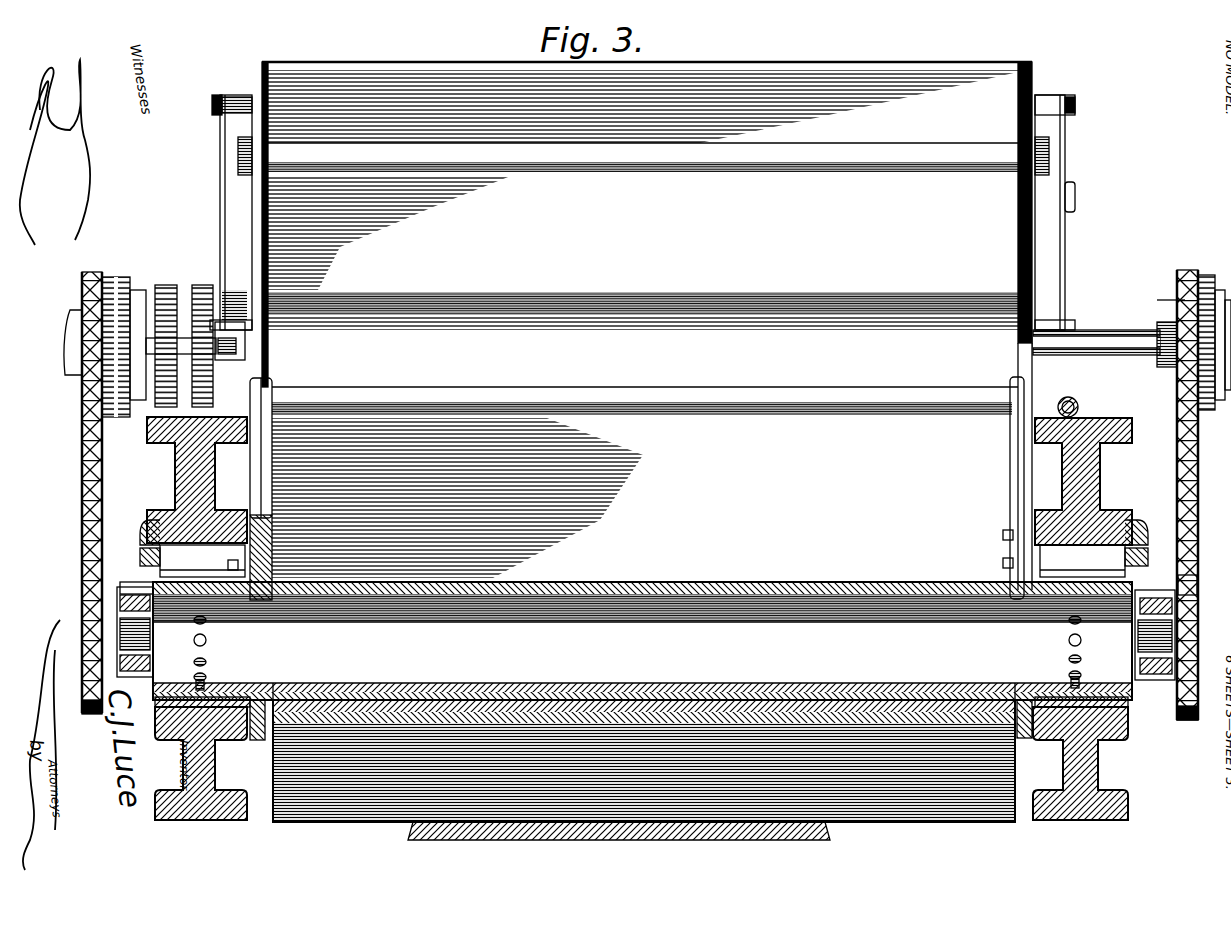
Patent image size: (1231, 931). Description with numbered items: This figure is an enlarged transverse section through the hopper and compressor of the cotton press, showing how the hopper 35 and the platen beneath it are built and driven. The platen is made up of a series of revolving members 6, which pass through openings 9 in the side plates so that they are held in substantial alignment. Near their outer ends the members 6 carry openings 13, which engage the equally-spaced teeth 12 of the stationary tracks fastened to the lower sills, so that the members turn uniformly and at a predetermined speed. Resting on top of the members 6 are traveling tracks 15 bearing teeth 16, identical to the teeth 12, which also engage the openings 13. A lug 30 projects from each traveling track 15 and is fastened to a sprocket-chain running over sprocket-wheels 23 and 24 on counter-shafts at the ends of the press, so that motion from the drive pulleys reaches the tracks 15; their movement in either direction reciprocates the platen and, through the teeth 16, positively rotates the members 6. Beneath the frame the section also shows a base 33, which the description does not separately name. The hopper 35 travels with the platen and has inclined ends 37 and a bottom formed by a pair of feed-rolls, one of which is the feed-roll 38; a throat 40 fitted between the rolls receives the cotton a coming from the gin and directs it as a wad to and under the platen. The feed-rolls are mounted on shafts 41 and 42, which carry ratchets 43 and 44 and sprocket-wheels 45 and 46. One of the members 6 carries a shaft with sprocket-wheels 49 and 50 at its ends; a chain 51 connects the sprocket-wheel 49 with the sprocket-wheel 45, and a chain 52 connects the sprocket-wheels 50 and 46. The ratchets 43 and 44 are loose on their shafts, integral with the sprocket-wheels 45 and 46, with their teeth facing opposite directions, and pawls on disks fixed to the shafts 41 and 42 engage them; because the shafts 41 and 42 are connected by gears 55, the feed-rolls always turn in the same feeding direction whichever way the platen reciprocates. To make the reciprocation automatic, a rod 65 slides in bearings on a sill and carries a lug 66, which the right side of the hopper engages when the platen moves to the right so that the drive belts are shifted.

The revolving members 6 is at (642, 641).
The openings 9 is at (258, 690).
The teeth 12 is at (206, 680).
The openings 13 is at (207, 640).
The traveling tracks 15 is at (194, 622).
The teeth 16 is at (1068, 625).
The sprocket-wheel 23 is at (1197, 582).
The sprocket-wheel 24 is at (1160, 675).
The lug 30 is at (150, 583).
The bed 33 is at (740, 712).
The hopper 35 is at (647, 212).
The inclined ends 37 is at (643, 180).
The feed-roll 38 is at (643, 339).
The throat 40 is at (642, 490).
The shaft 41 is at (238, 348).
The shaft 42 is at (160, 360).
The ratchet 43 is at (1168, 368).
The ratchet 44 is at (70, 312).
The sprocket-wheel 45 is at (1205, 278).
The sprocket-wheel 46 is at (100, 278).
The sprocket-wheel 49 is at (1188, 720).
The sprocket-wheel 50 is at (95, 714).
The chain 51 is at (1180, 440).
The chain 52 is at (70, 492).
The gears 55 is at (200, 290).
The rod 65 is at (1083, 399).
The lug 66 is at (1068, 398).
The cotton a is at (1214, 545).